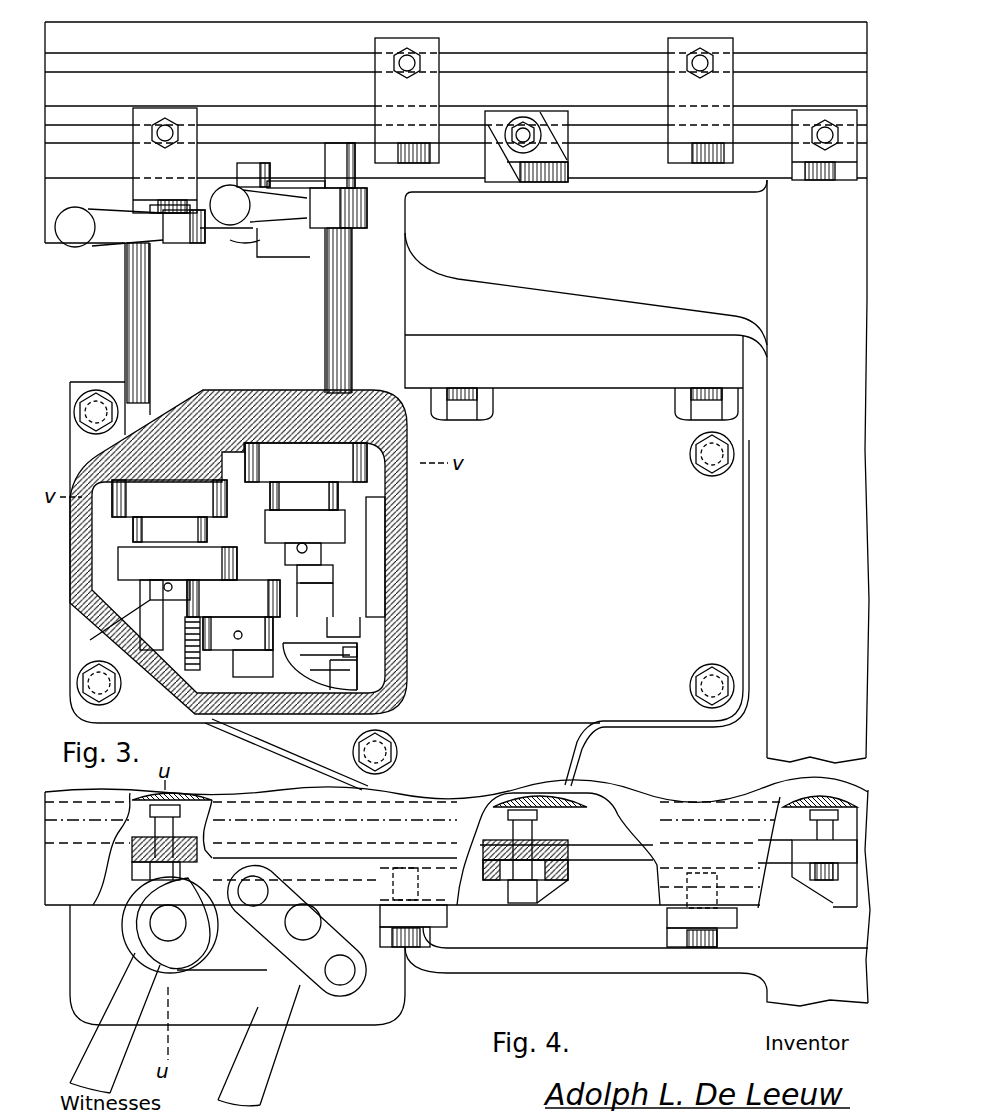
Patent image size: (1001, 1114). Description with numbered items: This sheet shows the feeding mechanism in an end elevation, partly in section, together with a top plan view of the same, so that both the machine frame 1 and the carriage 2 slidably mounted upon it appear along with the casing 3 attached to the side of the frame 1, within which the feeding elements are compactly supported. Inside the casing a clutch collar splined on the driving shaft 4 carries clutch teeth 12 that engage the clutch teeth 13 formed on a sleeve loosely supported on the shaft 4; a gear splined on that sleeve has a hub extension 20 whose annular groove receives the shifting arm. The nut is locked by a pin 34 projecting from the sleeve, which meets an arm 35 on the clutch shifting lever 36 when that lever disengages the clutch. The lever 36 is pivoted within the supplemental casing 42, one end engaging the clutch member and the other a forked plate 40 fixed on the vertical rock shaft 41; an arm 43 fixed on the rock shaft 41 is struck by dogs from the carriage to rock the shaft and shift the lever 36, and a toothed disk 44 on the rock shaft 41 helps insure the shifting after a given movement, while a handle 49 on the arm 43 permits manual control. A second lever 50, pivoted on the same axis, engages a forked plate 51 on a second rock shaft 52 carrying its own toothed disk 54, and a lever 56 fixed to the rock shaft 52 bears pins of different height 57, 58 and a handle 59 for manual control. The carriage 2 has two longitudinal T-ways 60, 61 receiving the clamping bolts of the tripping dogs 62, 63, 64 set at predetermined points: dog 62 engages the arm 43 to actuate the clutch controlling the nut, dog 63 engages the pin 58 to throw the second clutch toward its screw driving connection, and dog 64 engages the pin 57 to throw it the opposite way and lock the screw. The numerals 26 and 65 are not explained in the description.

In FIG. 3, the frame 1 is at (780, 652).
In FIG. 4, the frame 1 is at (760, 988).
In FIG. 3, the carriage 2 is at (652, 172).
In FIG. 4, the carriage 2 is at (655, 892).
In FIG. 3, the casing 3 is at (650, 722).
In FIG. 3, the driving shaft 4 is at (318, 590).
In FIG. 3, the clutch teeth 12 is at (312, 640).
In FIG. 3, the clutch teeth 13 is at (327, 622).
In FIG. 3, the hub extension 20 is at (232, 639).
In FIG. 3, the rack 26 is at (205, 665).
In FIG. 3, the pin 34 is at (357, 652).
In FIG. 3, the arm 35 is at (352, 675).
In FIG. 3, the lever 36 is at (280, 598).
In FIG. 3, the forked plate 40 is at (145, 580).
In FIG. 3, the rock shaft 41 is at (111, 629).
In FIG. 4, the rock shaft 41 is at (160, 925).
In FIG. 3, the supplemental casing 42 is at (405, 590).
In FIG. 4, the supplemental casing 42 is at (365, 1018).
In FIG. 4, the arm 43 is at (185, 880).
In FIG. 3, the toothed disk 44 is at (165, 203).
In FIG. 3, the handle 49 is at (78, 237).
In FIG. 4, the handle 49 is at (108, 1084).
In FIG. 3, the lever 50 is at (272, 548).
In FIG. 3, the forked plate 51 is at (262, 528).
In FIG. 3, the rock shaft 52 is at (302, 182).
In FIG. 4, the rock shaft 52 is at (300, 930).
In FIG. 3, the toothed disk 54 is at (365, 472).
In FIG. 3, the lever 56 is at (330, 215).
In FIG. 4, the lever 56 is at (335, 995).
In FIG. 3, the pin 57 is at (338, 152).
In FIG. 4, the pin 57 is at (252, 898).
In FIG. 3, the pin 58 is at (255, 162).
In FIG. 4, the pin 58 is at (345, 978).
In FIG. 3, the handle 59 is at (232, 235).
In FIG. 4, the handle 59 is at (258, 1087).
In FIG. 3, the T-way 60 is at (795, 66).
In FIG. 4, the T-way 60 is at (430, 880).
In FIG. 3, the T-way 61 is at (763, 138).
In FIG. 4, the T-way 61 is at (600, 812).
In FIG. 3, the tripping dog 62 is at (195, 172).
In FIG. 4, the tripping dog 62 is at (200, 842).
In FIG. 3, the tripping dog 63 is at (438, 85).
In FIG. 4, the tripping dog 63 is at (447, 918).
In FIG. 3, the tripping dog 64 is at (574, 174).
In FIG. 4, the tripping dog 64 is at (540, 895).
In FIG. 3, the clamp 65 is at (845, 172).
In FIG. 4, the clamp 65 is at (835, 898).